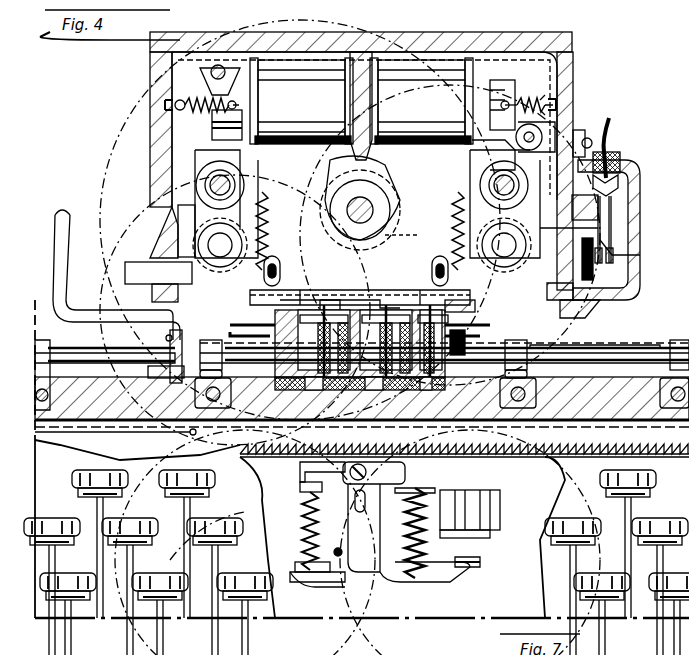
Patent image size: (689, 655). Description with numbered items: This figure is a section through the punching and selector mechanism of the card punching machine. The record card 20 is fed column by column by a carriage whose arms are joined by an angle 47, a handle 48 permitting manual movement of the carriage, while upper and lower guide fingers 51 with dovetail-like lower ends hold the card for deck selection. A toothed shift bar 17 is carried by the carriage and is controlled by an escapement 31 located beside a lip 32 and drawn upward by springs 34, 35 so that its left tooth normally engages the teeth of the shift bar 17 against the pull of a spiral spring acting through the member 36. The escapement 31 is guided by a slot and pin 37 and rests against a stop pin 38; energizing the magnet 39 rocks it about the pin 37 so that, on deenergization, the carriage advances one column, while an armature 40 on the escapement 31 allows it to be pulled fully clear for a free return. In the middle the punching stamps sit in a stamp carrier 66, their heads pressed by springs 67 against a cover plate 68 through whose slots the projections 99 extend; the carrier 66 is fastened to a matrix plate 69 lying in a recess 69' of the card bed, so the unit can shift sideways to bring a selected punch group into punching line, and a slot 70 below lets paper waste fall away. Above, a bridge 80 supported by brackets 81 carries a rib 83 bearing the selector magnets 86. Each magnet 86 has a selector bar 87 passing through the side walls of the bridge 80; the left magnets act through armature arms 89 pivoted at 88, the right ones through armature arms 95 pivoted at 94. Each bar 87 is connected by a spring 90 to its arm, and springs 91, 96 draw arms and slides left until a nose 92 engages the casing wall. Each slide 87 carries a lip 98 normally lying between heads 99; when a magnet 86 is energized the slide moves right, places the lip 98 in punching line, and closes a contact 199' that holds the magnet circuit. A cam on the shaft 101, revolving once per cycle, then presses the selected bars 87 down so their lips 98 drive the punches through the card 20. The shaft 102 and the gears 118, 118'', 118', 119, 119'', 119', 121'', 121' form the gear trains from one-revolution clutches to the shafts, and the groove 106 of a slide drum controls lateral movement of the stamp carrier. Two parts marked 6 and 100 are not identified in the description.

The bracket 6 is at (442, 369).
The shift bar 17 is at (520, 457).
The card 20 is at (512, 342).
The escapement 31 is at (300, 485).
The lip 32 is at (380, 574).
The spring 34 is at (300, 500).
The spring 35 is at (410, 572).
The member 36 is at (362, 529).
The pin 37 is at (365, 514).
The stop pin 38 is at (335, 567).
The magnet 39 is at (495, 500).
The armature 40 is at (300, 466).
The angle 47 is at (175, 347).
The handle 48 is at (62, 300).
The guide fingers 51 is at (208, 345).
The punching stamp carrier 66 is at (470, 318).
The springs 67 is at (260, 318).
The cover plate 68 is at (470, 298).
The matrix plate 69 is at (362, 373).
The recess 69' is at (444, 336).
The slot 70 is at (325, 422).
The bridge 80 is at (413, 48).
The brackets 81 is at (515, 70).
The rib 83 is at (360, 80).
The selector magnets 86 is at (296, 90).
The selector bar 87 is at (138, 262).
The pivot 88 is at (219, 63).
The armature arm 89 is at (220, 118).
The spring 90 is at (262, 220).
The spring 91 is at (195, 100).
The nose 92 is at (575, 323).
The pivot 94 is at (540, 135).
The armature arm 95 is at (503, 88).
The spring 96 is at (535, 97).
The lip 98 is at (345, 290).
The punching stamp heads 99 is at (355, 298).
The gear block 100 is at (385, 380).
The shaft 101 is at (360, 198).
The shaft 102 is at (405, 222).
The groove 106 is at (478, 160).
The gear 118 is at (284, 220).
The drive gear 118' is at (245, 542).
The idle gear 118'' is at (138, 470).
The gear 119 is at (606, 178).
The drive gear 119' is at (476, 579).
The idle gear 119'' is at (595, 340).
The drive gear 121' is at (450, 370).
The idle gear 121'' is at (207, 526).
The contact 199' is at (640, 252).